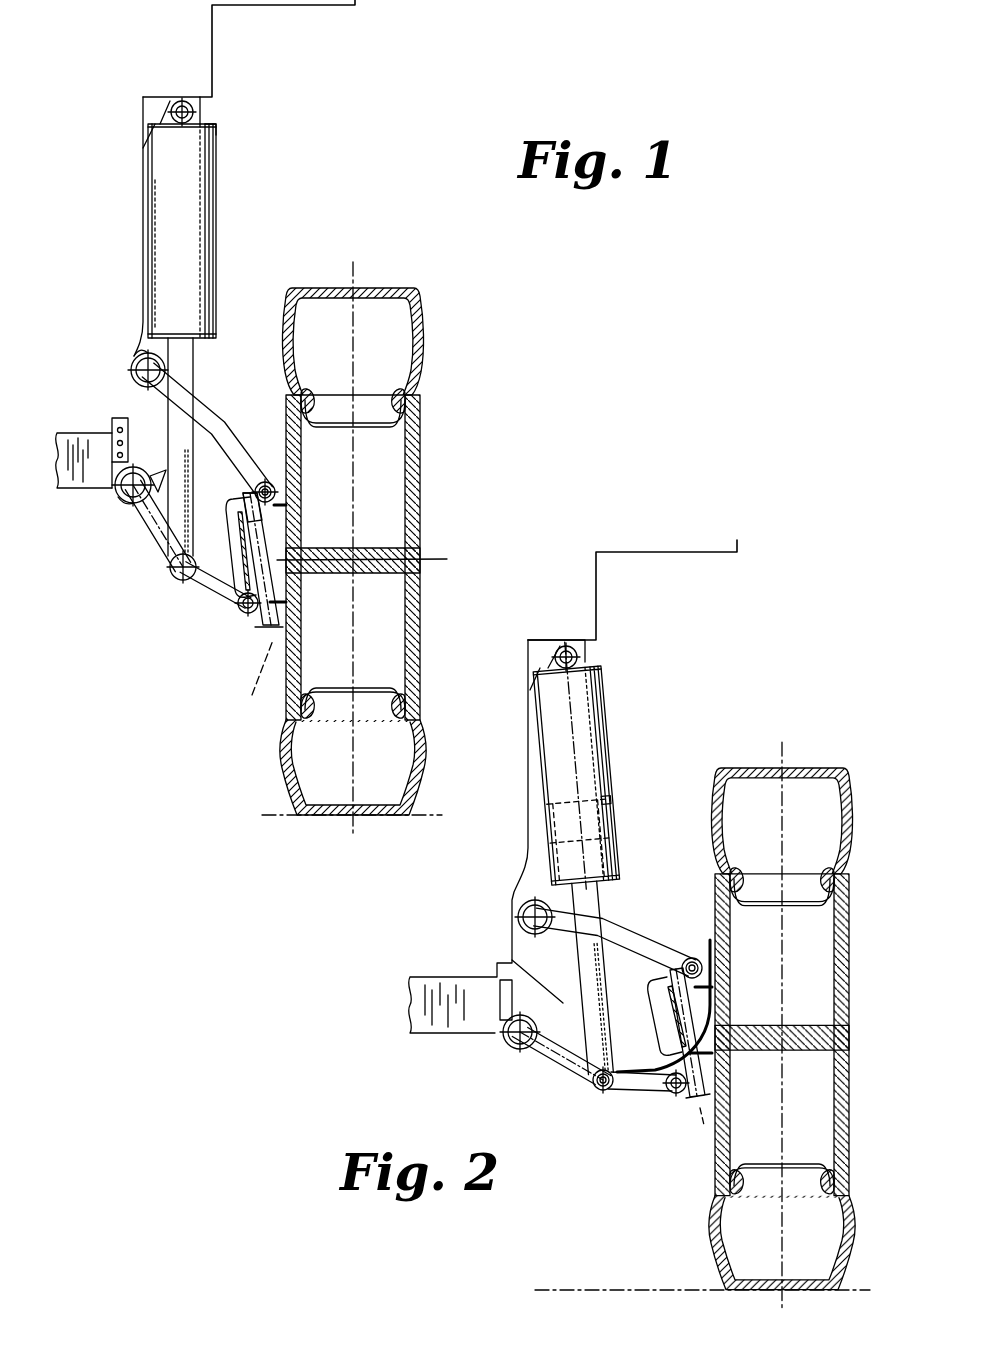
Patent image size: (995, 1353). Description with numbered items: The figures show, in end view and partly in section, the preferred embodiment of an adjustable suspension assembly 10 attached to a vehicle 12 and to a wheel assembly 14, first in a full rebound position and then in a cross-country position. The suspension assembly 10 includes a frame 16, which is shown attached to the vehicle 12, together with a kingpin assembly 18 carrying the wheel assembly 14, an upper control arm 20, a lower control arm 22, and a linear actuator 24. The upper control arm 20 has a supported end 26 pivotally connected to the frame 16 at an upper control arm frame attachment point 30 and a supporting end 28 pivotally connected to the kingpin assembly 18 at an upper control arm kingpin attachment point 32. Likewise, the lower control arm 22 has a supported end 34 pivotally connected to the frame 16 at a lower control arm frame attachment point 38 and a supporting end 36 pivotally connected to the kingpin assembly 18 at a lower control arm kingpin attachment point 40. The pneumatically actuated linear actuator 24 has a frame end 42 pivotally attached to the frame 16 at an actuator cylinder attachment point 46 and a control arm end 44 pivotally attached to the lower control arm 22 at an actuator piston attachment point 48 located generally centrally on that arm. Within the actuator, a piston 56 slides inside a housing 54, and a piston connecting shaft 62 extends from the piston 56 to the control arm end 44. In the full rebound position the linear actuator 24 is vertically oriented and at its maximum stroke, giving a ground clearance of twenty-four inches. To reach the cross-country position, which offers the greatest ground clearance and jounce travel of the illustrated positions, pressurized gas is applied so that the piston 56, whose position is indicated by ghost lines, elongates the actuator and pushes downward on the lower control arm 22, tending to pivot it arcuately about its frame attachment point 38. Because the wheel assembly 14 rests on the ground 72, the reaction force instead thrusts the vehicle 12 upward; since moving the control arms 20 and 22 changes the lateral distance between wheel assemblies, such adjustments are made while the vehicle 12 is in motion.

In FIG. 1, the adjustable suspension assembly 10 is at (262, 268).
In FIG. 2, the adjustable suspension assembly 10 is at (674, 770).
In FIG. 1, the vehicle 12 is at (218, 36).
In FIG. 2, the vehicle 12 is at (598, 606).
In FIG. 1, the wheel assembly 14 is at (430, 471).
In FIG. 2, the wheel assembly 14 is at (706, 1134).
In FIG. 1, the frame 16 is at (200, 107).
In FIG. 2, the frame 16 is at (584, 658).
In FIG. 1, the kingpin assembly 18 is at (276, 642).
In FIG. 1, the upper control arm 20 is at (232, 437).
In FIG. 2, the upper control arm 20 is at (650, 937).
In FIG. 1, the lower control arm 22 is at (148, 548).
In FIG. 2, the lower control arm 22 is at (552, 1070).
In FIG. 1, the linear actuator 24 is at (222, 194).
In FIG. 2, the linear actuator 24 is at (608, 674).
In FIG. 1, the supported end 26 is at (140, 352).
In FIG. 1, the supporting end 28 is at (276, 490).
In FIG. 1, the upper control arm frame attachment point 30 is at (131, 370).
In FIG. 1, the upper control arm kingpin attachment point 32 is at (377, 560).
In FIG. 1, the supported end 34 is at (118, 496).
In FIG. 1, the supporting end 36 is at (245, 636).
In FIG. 1, the lower control arm frame attachment point 38 is at (127, 508).
In FIG. 1, the lower control arm kingpin attachment point 40 is at (235, 622).
In FIG. 1, the frame end 42 is at (210, 119).
In FIG. 1, the control arm end 44 is at (238, 605).
In FIG. 1, the actuator cylinder attachment point 46 is at (174, 106).
In FIG. 1, the actuator piston attachment point 48 is at (178, 580).
In FIG. 2, the housing 54 is at (608, 708).
In FIG. 2, the piston 56 is at (613, 800).
In FIG. 2, the piston connecting shaft 62 is at (613, 982).
In FIG. 2, the ground 72 is at (566, 1290).